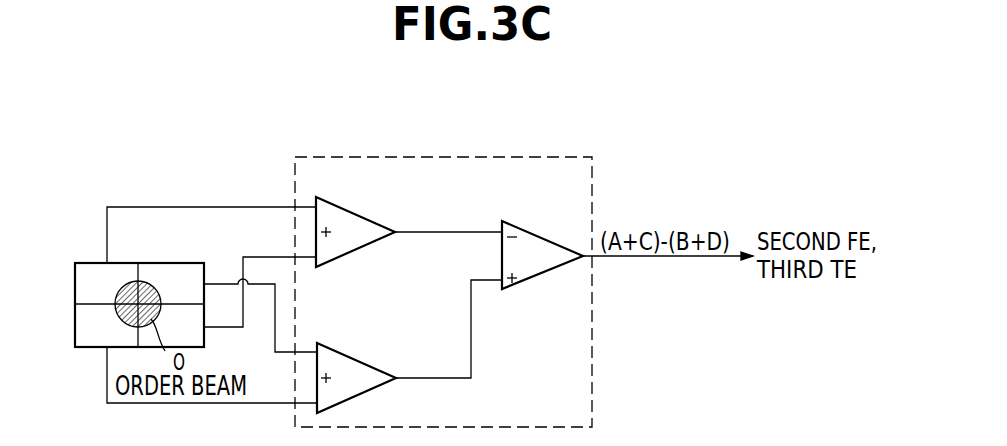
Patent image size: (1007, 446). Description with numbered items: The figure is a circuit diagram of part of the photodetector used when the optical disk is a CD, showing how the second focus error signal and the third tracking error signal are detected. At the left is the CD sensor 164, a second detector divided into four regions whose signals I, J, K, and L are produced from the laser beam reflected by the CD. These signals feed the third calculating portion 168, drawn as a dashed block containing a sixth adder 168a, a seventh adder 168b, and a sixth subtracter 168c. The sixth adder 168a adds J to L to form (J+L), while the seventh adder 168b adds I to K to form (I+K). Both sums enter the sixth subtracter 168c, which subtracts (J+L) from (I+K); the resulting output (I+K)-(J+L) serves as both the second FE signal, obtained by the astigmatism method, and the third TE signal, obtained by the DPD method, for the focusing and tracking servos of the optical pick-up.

The CD sensor 164 is at (75, 304).
The third calculating portion 168 is at (446, 157).
The sixth adder 168a is at (362, 212).
The seventh adder 168b is at (363, 358).
The sixth subtracter 168c is at (540, 275).